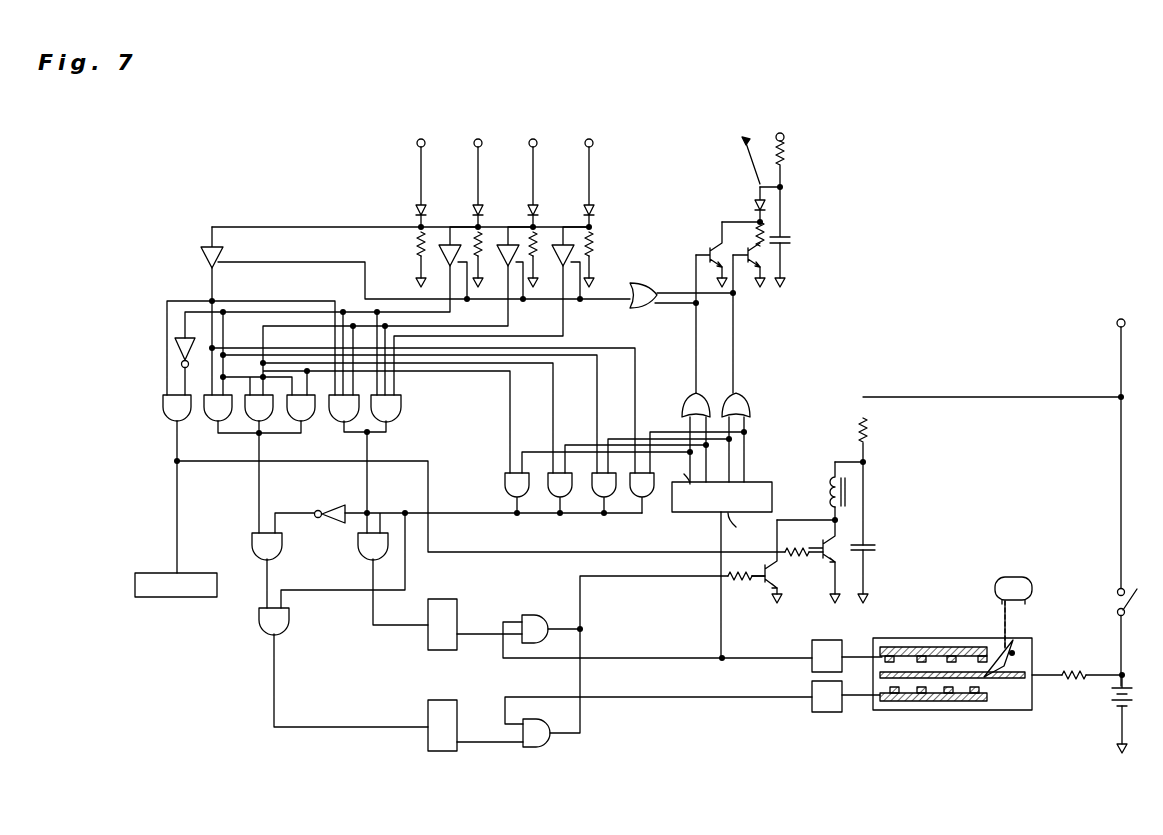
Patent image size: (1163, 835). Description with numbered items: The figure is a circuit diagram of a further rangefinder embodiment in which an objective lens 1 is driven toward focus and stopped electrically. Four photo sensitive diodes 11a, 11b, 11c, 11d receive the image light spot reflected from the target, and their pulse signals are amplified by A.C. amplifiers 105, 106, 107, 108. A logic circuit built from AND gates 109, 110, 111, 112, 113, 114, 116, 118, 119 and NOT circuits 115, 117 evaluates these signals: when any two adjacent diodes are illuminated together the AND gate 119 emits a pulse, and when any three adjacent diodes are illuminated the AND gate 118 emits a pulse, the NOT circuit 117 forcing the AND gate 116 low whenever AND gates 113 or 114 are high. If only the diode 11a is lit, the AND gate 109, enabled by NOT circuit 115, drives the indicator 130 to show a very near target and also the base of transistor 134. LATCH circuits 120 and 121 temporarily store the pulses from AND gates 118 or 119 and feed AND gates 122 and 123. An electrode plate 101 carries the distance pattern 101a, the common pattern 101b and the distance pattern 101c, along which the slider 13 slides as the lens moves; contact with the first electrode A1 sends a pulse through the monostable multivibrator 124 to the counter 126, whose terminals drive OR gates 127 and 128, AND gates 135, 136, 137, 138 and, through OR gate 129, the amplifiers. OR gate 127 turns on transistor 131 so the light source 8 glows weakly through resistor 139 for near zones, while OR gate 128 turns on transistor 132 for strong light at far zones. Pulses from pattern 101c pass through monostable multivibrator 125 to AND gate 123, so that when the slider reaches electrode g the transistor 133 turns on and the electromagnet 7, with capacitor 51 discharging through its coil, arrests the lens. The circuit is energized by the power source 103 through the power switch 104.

The photo sensitive diode 11a is at (417, 208).
The photo sensitive diode 11b is at (474, 208).
The photo sensitive diode 11c is at (529, 208).
The photo sensitive diode 11d is at (585, 208).
The A.C. amplifier 105 is at (203, 256).
The A.C. amplifier 106 is at (440, 257).
The A.C. amplifier 107 is at (510, 270).
The A.C. amplifier 108 is at (572, 254).
The AND gate 109 is at (172, 418).
The AND gate 110 is at (216, 418).
The AND gate 111 is at (256, 418).
The AND gate 112 is at (297, 418).
The AND gate 113 is at (340, 412).
The AND gate 114 is at (397, 410).
The NOT circuit 115 is at (178, 348).
The AND gate 116 is at (252, 551).
The NOT circuit 117 is at (338, 504).
The AND gate 118 is at (358, 551).
The AND gate 119 is at (284, 628).
The LATCH circuit 120 is at (443, 608).
The LATCH circuit 121 is at (442, 751).
The AND gate 122 is at (535, 616).
The AND gate 123 is at (538, 748).
The monostable multivibrator 124 is at (812, 653).
The monostable multivibrator 125 is at (812, 704).
The counter 126 is at (770, 482).
The OR gate 127 is at (742, 410).
The OR gate 128 is at (700, 408).
The OR gate 129 is at (648, 310).
The indicator 130 is at (175, 598).
The transistor 131 is at (720, 240).
The transistor 132 is at (742, 254).
The transistor 133 is at (784, 585).
The transistor 134 is at (838, 541).
The AND gate 135 is at (509, 492).
The AND gate 136 is at (552, 492).
The AND gate 137 is at (596, 492).
The AND gate 138 is at (650, 492).
The resistor 139 is at (778, 236).
The light source 8 is at (755, 205).
The electromagnet 7 is at (822, 495).
The capacitor 51 is at (874, 548).
The electrode plate 101 is at (950, 638).
The distance pattern 101a is at (906, 647).
The common pattern 101b is at (880, 676).
The distance pattern 101c is at (896, 701).
The electrode g is at (923, 701).
The first electrode A1 is at (984, 650).
The slider 13 is at (1015, 653).
The objective lens 1 is at (1016, 578).
The power switch 104 is at (1117, 593).
The power source 103 is at (1115, 697).